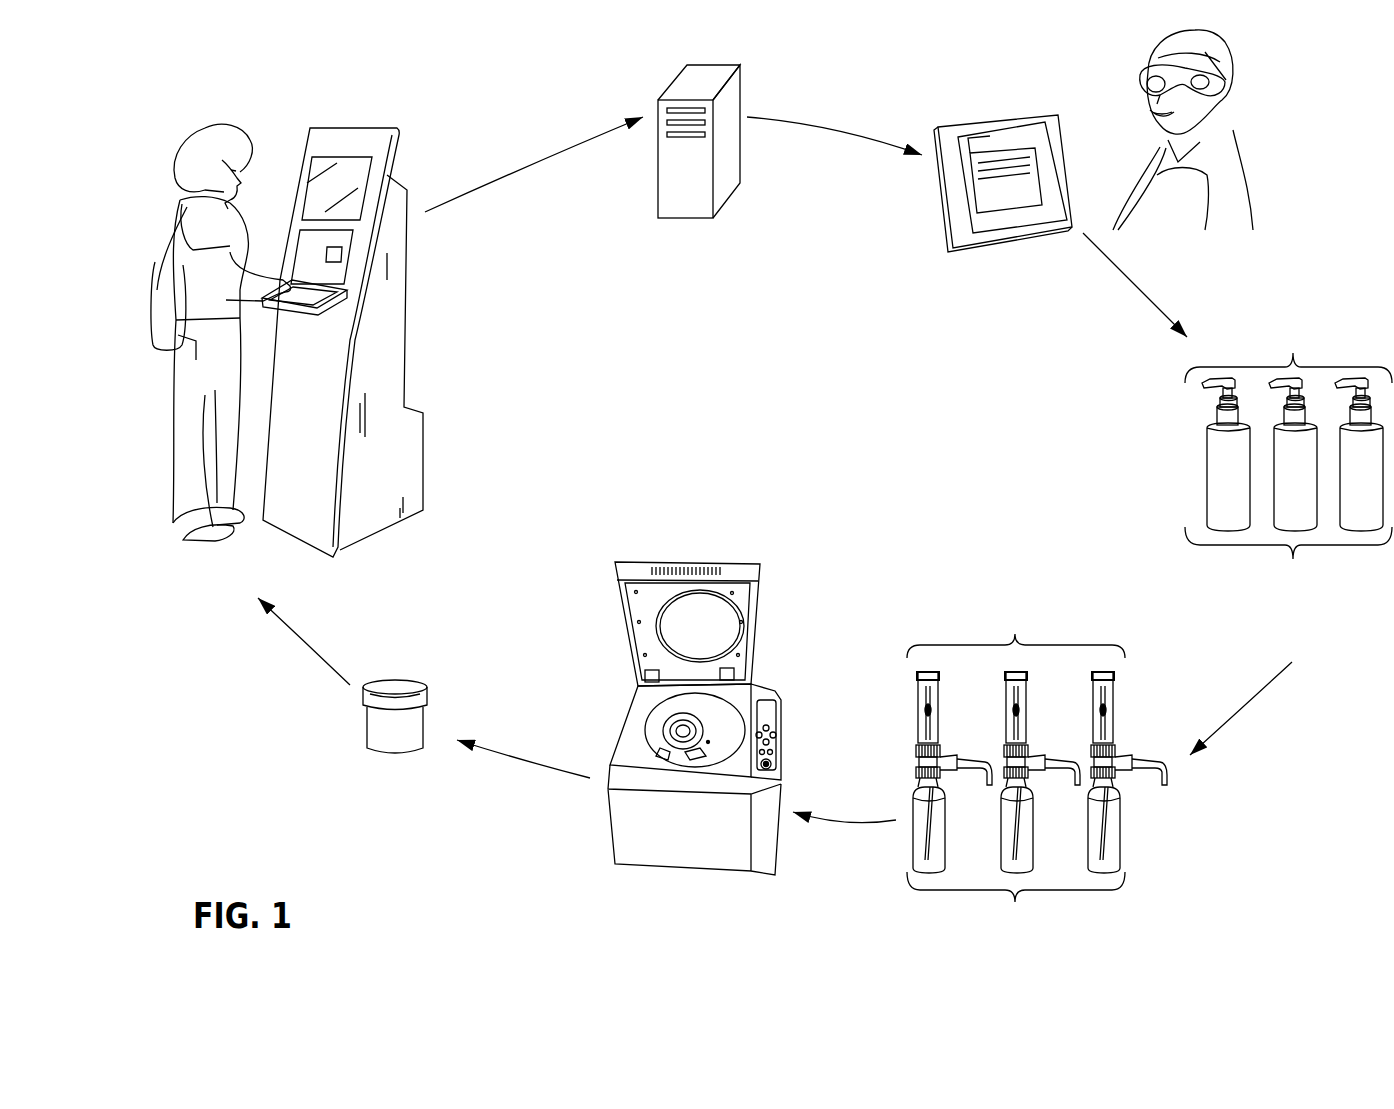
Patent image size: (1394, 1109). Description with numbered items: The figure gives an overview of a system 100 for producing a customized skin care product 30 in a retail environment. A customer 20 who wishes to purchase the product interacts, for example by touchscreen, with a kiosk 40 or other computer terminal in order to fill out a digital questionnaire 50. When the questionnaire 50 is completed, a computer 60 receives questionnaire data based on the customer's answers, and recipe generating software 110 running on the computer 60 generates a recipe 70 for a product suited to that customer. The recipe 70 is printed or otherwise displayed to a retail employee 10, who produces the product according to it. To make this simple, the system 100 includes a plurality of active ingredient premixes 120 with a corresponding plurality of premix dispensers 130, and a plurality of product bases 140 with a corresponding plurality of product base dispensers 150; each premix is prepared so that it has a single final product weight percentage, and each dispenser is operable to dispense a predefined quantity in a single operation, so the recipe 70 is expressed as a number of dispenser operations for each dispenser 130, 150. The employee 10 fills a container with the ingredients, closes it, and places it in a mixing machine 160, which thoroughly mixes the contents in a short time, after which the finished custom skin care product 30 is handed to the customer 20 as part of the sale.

The system 100 is at (283, 38).
The customer 20 is at (187, 152).
The kiosk 40 is at (422, 115).
The digital questionnaire 50 is at (357, 173).
The computer 60 is at (753, 124).
The recipe generating software 110 is at (772, 80).
The recipe 70 is at (1005, 155).
The retail employee 10 is at (1228, 188).
The product base dispensers 150 is at (1288, 455).
The product bases 140 is at (1317, 645).
The premix dispensers 130 is at (1037, 743).
The active ingredient premixes 120 is at (1113, 935).
The mixing machine 160 is at (693, 560).
The customized skin care product 30 is at (407, 678).